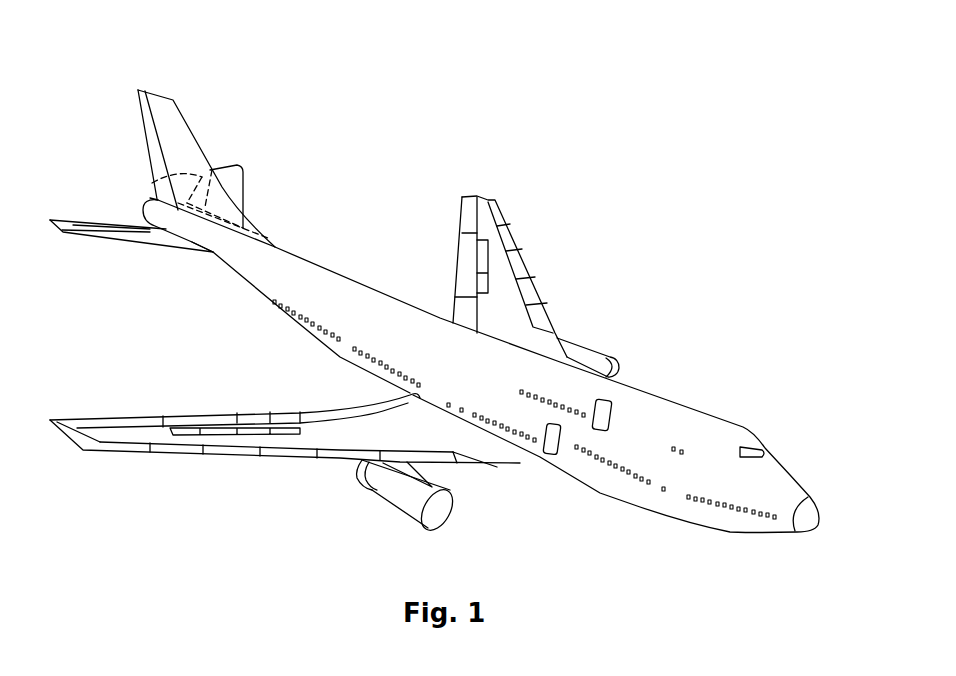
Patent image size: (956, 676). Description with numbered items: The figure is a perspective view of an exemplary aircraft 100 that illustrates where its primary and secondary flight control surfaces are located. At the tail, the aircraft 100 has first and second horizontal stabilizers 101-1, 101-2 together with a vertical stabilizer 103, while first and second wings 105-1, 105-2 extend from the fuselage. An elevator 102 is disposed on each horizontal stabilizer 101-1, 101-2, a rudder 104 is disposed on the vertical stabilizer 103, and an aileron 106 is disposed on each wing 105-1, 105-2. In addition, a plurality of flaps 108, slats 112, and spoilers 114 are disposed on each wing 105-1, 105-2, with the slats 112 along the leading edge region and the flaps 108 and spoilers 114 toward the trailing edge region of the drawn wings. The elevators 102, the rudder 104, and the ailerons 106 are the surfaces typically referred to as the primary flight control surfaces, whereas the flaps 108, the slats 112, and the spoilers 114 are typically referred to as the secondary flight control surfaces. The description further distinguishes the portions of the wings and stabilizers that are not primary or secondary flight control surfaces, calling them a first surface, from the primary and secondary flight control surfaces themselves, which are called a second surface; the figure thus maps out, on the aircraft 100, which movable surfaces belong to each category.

The aircraft 100 is at (578, 138).
The first horizontal stabilizer 101-1 is at (121, 243).
The second horizontal stabilizer 101-2 is at (244, 183).
The elevator 102 is at (160, 186).
The vertical stabilizer 103 is at (192, 128).
The rudder 104 is at (148, 131).
The first wing 105-1 is at (477, 452).
The second wing 105-2 is at (578, 324).
The aileron 106 is at (120, 420).
The flaps 108 is at (332, 413).
The slats 112 is at (343, 457).
The spoilers 114 is at (222, 432).